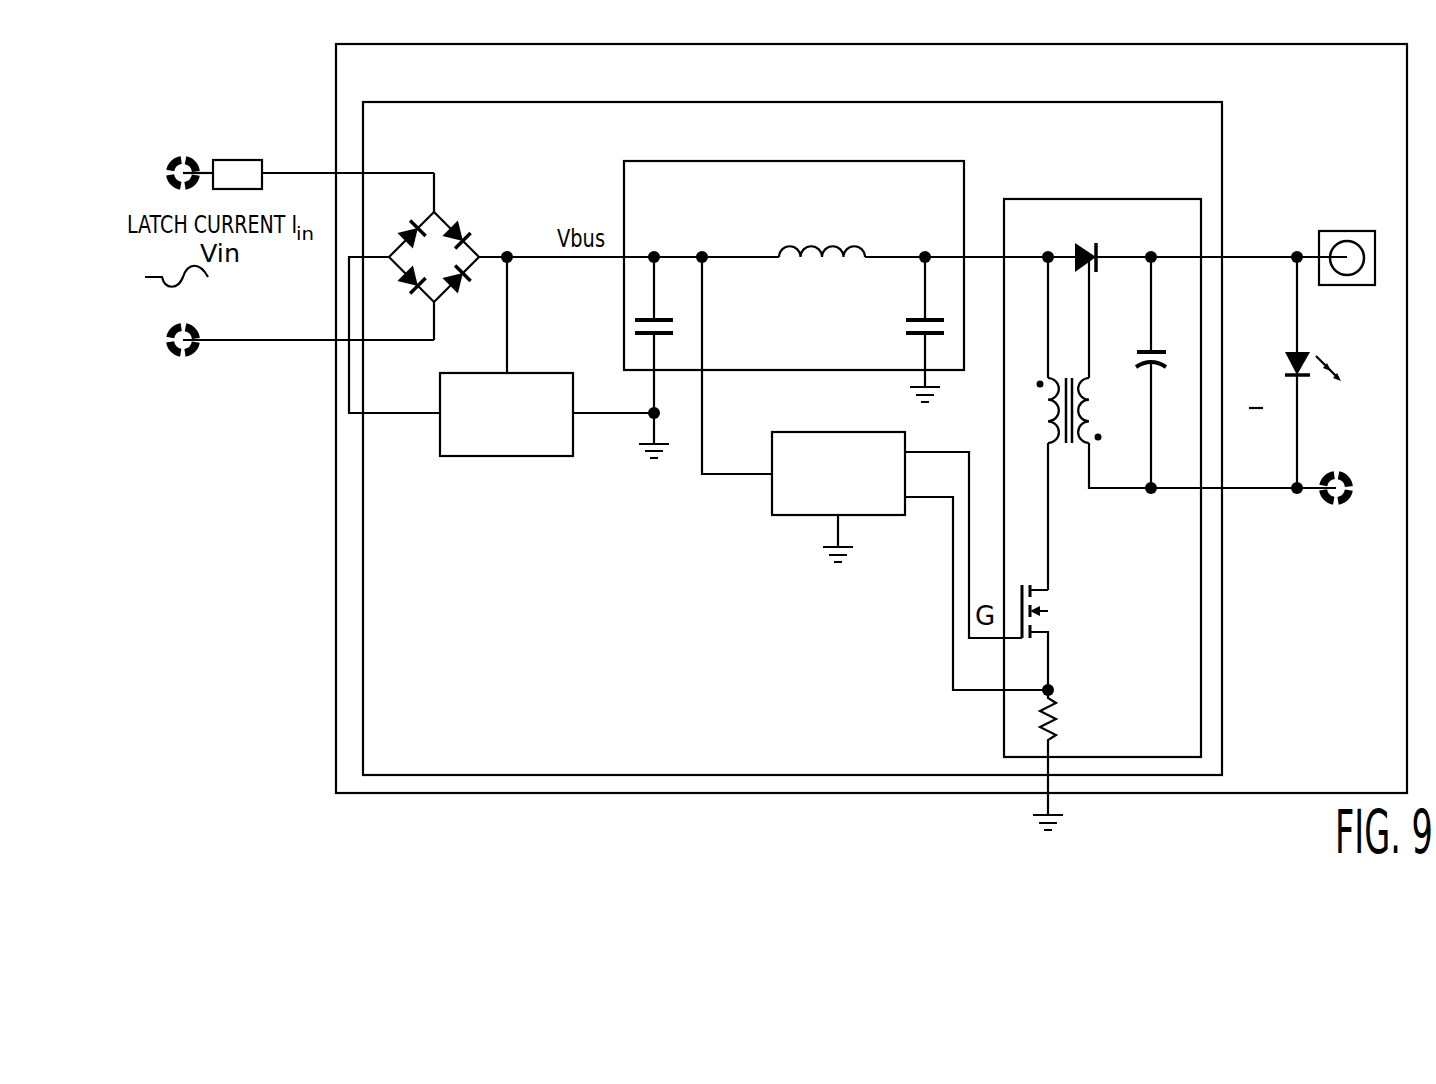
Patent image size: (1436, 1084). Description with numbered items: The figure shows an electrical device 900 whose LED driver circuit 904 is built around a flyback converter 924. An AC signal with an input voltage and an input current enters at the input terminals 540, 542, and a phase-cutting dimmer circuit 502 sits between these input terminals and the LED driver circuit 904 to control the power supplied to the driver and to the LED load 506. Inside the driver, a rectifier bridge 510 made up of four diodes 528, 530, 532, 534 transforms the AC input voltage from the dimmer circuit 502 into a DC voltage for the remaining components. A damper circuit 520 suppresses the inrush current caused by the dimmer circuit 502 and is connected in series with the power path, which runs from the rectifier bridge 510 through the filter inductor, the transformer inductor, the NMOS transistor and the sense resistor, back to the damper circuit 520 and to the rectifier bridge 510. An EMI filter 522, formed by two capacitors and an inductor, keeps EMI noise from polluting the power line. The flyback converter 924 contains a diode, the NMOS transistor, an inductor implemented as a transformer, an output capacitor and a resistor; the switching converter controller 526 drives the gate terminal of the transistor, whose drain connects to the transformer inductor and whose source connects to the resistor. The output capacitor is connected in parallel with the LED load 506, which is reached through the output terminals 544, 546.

The electrical device 900 is at (345, 793).
The LED driver circuit 904 is at (362, 593).
The dimmer circuit 502 is at (238, 160).
The input terminal 540 is at (178, 160).
The input terminal 542 is at (178, 358).
The rectifier bridge 510 is at (472, 205).
The diode 528 is at (403, 226).
The diode 530 is at (407, 281).
The diode 532 is at (460, 292).
The diode 534 is at (470, 226).
The damper circuit 520 is at (540, 373).
The EMI filter 522 is at (964, 190).
The switching converter controller 526 is at (772, 490).
The flyback converter 924 is at (1092, 199).
The output terminal 544 is at (1346, 231).
The LED load 506 is at (1310, 350).
The output terminal 546 is at (1326, 506).